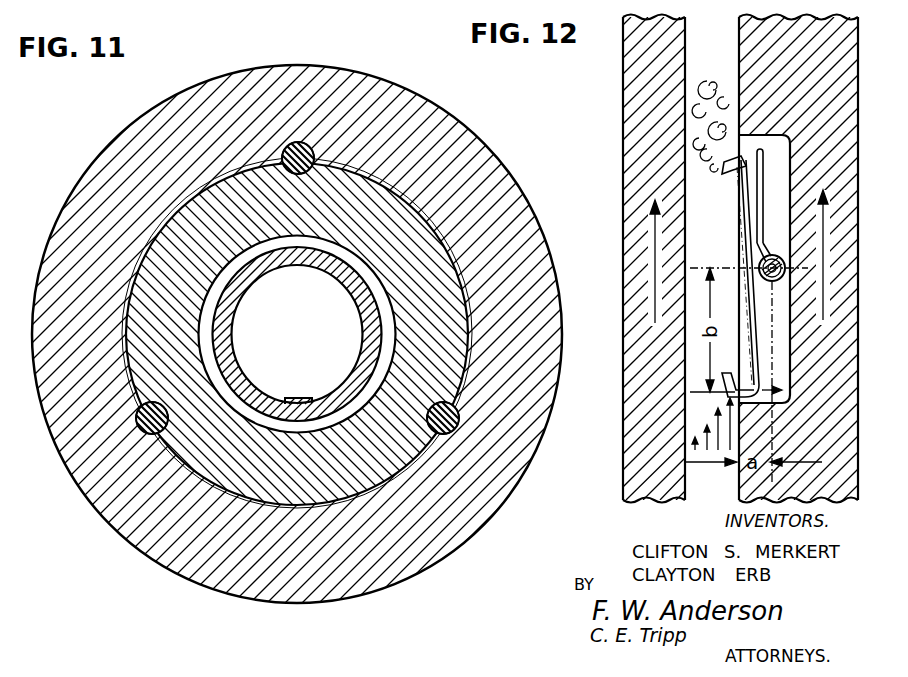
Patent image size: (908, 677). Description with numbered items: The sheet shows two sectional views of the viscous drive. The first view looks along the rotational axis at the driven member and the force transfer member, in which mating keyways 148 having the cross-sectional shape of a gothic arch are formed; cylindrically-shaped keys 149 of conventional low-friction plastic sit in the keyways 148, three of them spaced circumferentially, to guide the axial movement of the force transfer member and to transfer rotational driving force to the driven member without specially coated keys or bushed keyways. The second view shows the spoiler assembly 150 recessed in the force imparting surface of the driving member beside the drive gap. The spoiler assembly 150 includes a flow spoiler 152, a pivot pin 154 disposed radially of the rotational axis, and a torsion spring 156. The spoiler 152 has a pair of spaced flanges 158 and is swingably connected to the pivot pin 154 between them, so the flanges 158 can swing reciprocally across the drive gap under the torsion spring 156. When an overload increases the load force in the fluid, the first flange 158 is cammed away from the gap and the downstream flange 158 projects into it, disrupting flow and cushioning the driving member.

In FIG. 11, the keyways 148 is at (305, 150).
In FIG. 11, the keys 149 is at (317, 161).
In FIG. 12, the spoiler assembly 150 is at (700, 183).
In FIG. 12, the flow spoiler 152 is at (752, 228).
In FIG. 12, the pivot pin 154 is at (765, 263).
In FIG. 12, the torsion spring 156 is at (768, 200).
In FIG. 12, the flanges 158 is at (740, 157).